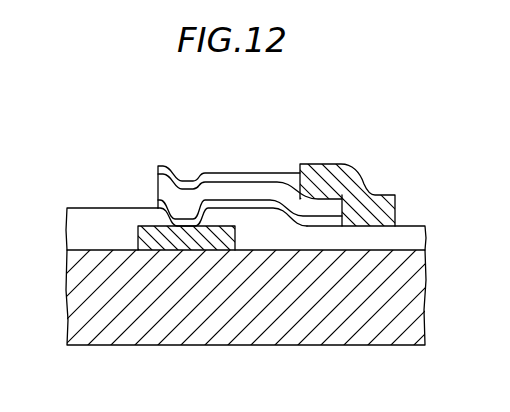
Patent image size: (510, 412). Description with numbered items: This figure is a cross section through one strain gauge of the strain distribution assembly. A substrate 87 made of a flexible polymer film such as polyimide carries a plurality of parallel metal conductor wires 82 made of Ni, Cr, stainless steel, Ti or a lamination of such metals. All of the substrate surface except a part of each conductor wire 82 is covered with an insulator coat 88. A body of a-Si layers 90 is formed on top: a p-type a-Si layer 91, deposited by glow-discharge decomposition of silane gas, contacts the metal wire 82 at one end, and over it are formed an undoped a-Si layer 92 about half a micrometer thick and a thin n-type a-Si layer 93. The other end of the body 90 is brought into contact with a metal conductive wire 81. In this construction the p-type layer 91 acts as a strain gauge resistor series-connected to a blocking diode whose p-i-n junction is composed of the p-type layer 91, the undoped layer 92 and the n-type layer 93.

The metal conductive wire 81 is at (345, 175).
The metal conductor wire 82 is at (147, 230).
The substrate 87 is at (347, 340).
The insulator coat 88 is at (83, 220).
The body of a-Si layers 90 is at (172, 125).
The p-type a-Si layer 91 is at (271, 205).
The undoped a-Si layer 92 is at (233, 189).
The n-type a-Si layer 93 is at (200, 177).